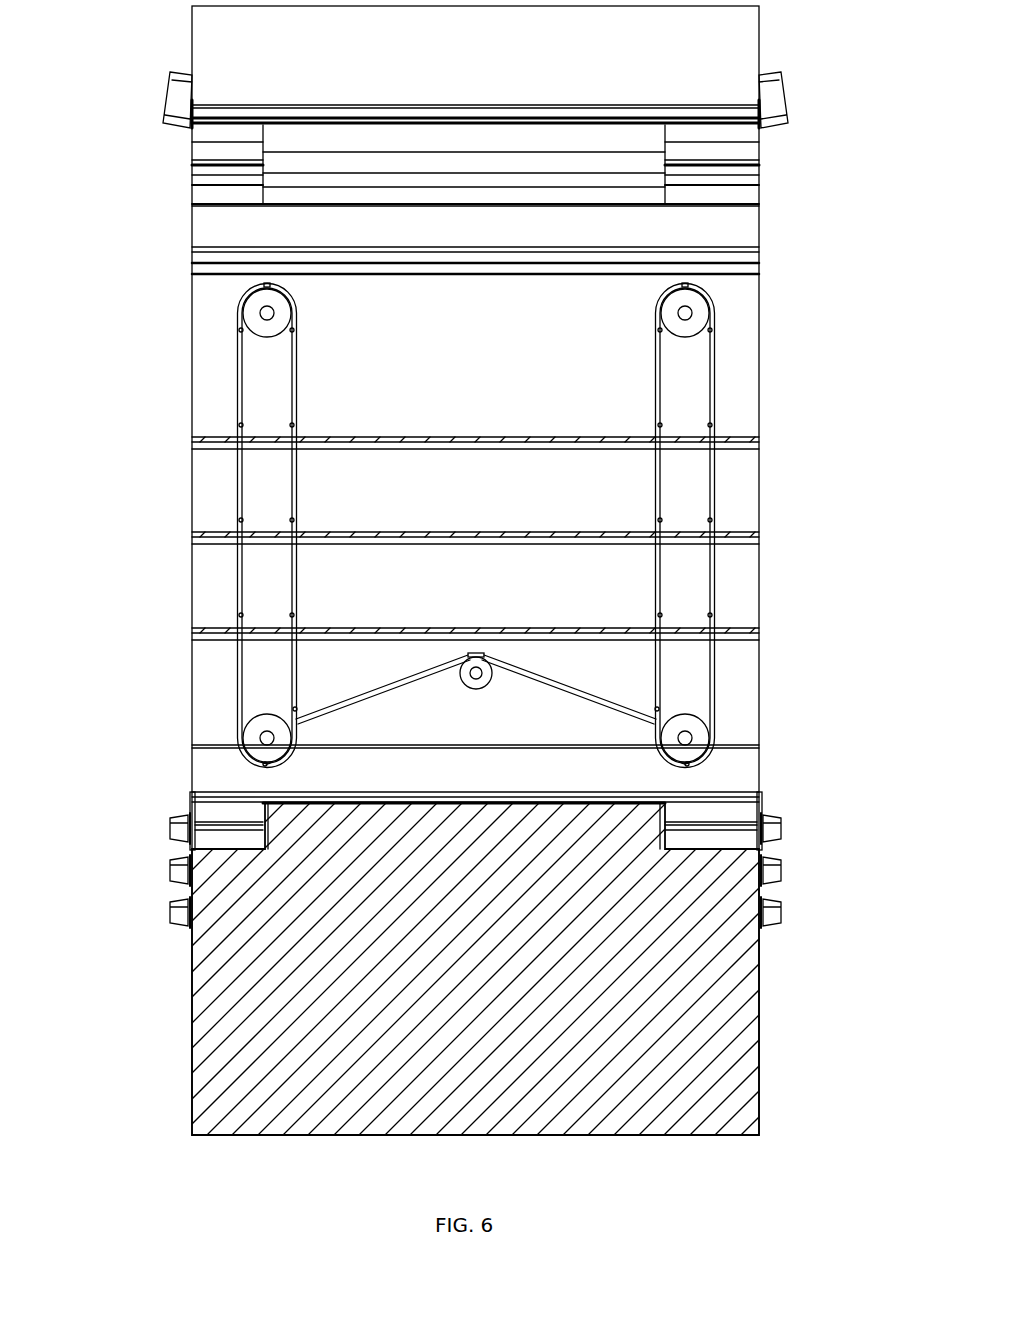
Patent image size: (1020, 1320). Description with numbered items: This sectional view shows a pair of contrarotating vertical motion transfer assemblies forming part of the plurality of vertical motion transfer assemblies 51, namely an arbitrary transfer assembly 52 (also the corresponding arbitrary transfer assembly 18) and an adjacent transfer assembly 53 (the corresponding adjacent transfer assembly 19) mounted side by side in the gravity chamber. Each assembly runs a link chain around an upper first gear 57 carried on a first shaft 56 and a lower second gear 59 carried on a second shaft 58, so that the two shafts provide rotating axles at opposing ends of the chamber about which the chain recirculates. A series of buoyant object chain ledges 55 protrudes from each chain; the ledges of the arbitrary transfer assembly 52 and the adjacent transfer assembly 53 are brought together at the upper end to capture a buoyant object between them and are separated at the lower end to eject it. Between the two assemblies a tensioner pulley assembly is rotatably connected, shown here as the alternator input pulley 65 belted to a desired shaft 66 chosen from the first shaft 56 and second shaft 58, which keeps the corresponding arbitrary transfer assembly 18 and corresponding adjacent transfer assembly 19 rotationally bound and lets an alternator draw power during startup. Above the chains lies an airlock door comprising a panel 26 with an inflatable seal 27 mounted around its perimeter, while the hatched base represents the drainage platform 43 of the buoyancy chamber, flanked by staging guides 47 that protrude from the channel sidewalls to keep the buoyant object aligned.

The corresponding arbitrary transfer assembly 18 is at (796, 525).
The corresponding adjacent transfer assembly 19 is at (156, 525).
The panel 26 is at (762, 127).
The inflatable seal 27 is at (194, 130).
The drainage platform 43 is at (212, 197).
The staging guides 47 is at (178, 97).
The plurality of vertical motion transfer assemblies 51 is at (733, 240).
The arbitrary transfer assembly 52 is at (727, 391).
The adjacent transfer assembly 53 is at (225, 391).
The buoyant object chain ledge 55 is at (292, 330).
The first shaft 56 is at (262, 307).
The first gear 57 is at (250, 317).
The second shaft 58 is at (475, 721).
The second gear 59 is at (271, 720).
The alternator input pulley 65 is at (478, 673).
The desired shaft 66 is at (266, 738).